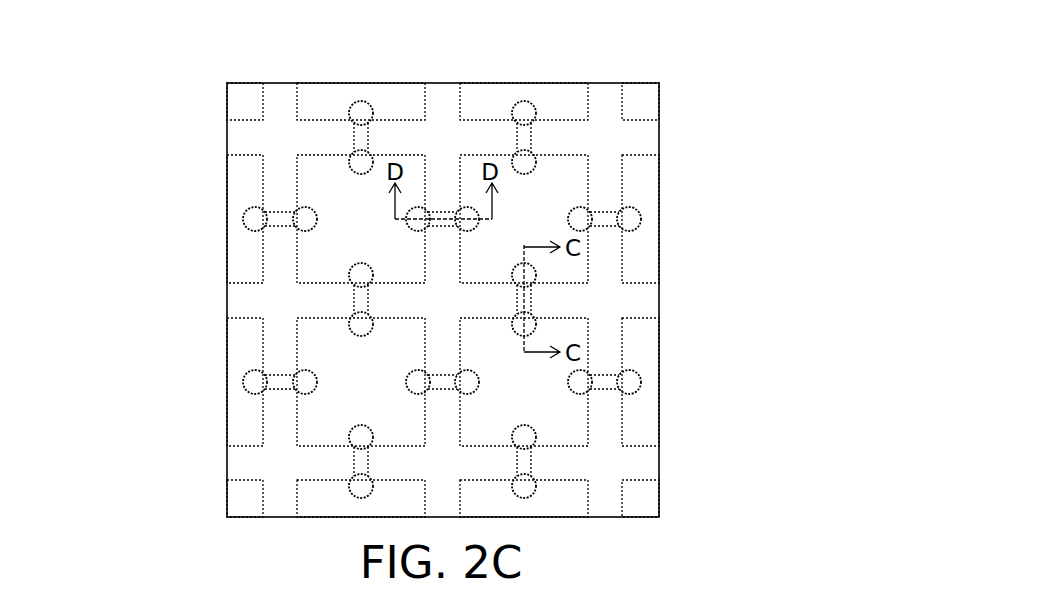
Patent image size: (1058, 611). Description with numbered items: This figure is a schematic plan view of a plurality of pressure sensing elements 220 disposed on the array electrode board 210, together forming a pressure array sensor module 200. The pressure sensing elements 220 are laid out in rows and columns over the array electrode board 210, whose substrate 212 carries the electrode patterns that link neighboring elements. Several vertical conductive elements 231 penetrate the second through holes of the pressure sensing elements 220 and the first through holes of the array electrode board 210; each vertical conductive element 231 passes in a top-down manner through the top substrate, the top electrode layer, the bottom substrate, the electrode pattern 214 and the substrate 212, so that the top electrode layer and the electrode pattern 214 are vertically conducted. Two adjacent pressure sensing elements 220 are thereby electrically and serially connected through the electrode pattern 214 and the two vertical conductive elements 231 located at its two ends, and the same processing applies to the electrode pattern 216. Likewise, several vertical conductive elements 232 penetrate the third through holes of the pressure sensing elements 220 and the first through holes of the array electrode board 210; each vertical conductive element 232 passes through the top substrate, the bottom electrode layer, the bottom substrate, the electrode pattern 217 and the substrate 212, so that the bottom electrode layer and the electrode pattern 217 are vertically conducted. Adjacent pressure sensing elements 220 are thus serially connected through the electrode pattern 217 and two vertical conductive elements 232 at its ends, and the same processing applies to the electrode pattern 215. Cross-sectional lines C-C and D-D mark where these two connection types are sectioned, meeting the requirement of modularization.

The pressure array sensor module 200 is at (30, 38).
The array electrode board 210 is at (240, 60).
The substrate 212 is at (640, 137).
The electrode pattern 214 is at (533, 297).
The electrode pattern 215 is at (605, 219).
The electrode pattern 216 is at (522, 138).
The electrode pattern 217 is at (445, 222).
The pressure sensing element 220 is at (460, 142).
The vertical conductive element 231 is at (467, 207).
The vertical conductive element 232 is at (415, 208).